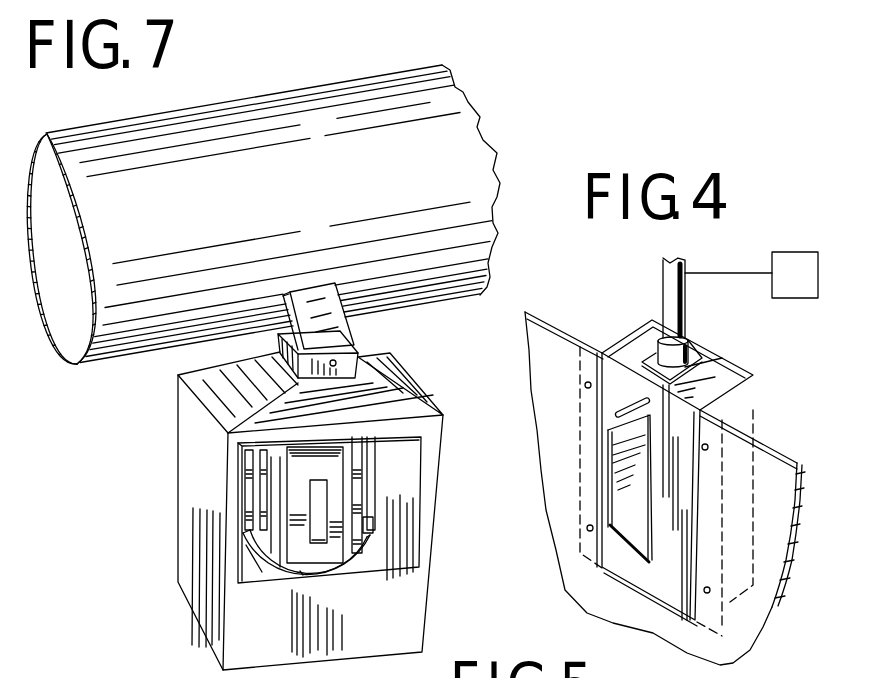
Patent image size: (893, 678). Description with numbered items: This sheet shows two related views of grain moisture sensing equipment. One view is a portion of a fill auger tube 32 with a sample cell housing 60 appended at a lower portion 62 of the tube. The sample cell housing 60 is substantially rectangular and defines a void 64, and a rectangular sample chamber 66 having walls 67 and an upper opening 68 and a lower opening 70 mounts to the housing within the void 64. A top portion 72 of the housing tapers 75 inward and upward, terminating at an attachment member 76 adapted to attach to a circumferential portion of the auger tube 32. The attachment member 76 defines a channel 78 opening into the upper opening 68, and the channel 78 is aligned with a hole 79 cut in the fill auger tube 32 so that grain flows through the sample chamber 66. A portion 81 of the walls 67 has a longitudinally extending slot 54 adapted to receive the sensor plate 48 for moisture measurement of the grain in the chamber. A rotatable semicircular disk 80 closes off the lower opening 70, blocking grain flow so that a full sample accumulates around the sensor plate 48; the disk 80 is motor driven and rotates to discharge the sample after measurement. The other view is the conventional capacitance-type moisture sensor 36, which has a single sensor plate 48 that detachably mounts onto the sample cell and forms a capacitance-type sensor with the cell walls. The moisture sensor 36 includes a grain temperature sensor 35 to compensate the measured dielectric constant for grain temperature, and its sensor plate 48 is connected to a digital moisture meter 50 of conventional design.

In FIG. 7, the fill auger tube 32 is at (297, 90).
In FIG. 7, the lower portion of the fill auger tube 62 is at (120, 363).
In FIG. 7, the channel 78 is at (347, 283).
In FIG. 7, the hole 79 is at (292, 315).
In FIG. 7, the attachment member 76 is at (352, 328).
In FIG. 7, the taper 75 is at (232, 363).
In FIG. 7, the top portion of the sample chamber housing 72 is at (280, 511).
In FIG. 7, the sample cell housing 60 is at (280, 511).
In FIG. 7, the walls 67 is at (281, 478).
In FIG. 7, the upper opening 68 is at (345, 462).
In FIG. 7, the portion of walls 81 is at (322, 548).
In FIG. 7, the longitudinally extending slot 54 is at (318, 538).
In FIG. 7, the rectangular sample chamber 66 is at (362, 489).
In FIG. 7, the rotatable semicircular disk 80 is at (371, 537).
In FIG. 7, the lower opening 70 is at (361, 586).
In FIG. 7, the void 64 is at (262, 572).
In FIG. 4, the sensor plate 48 is at (637, 533).
In FIG. 4, the moisture sensor 36 is at (689, 442).
In FIG. 4, the grain temperature sensor 35 is at (637, 405).
In FIG. 4, the digital moisture meter 50 is at (808, 288).